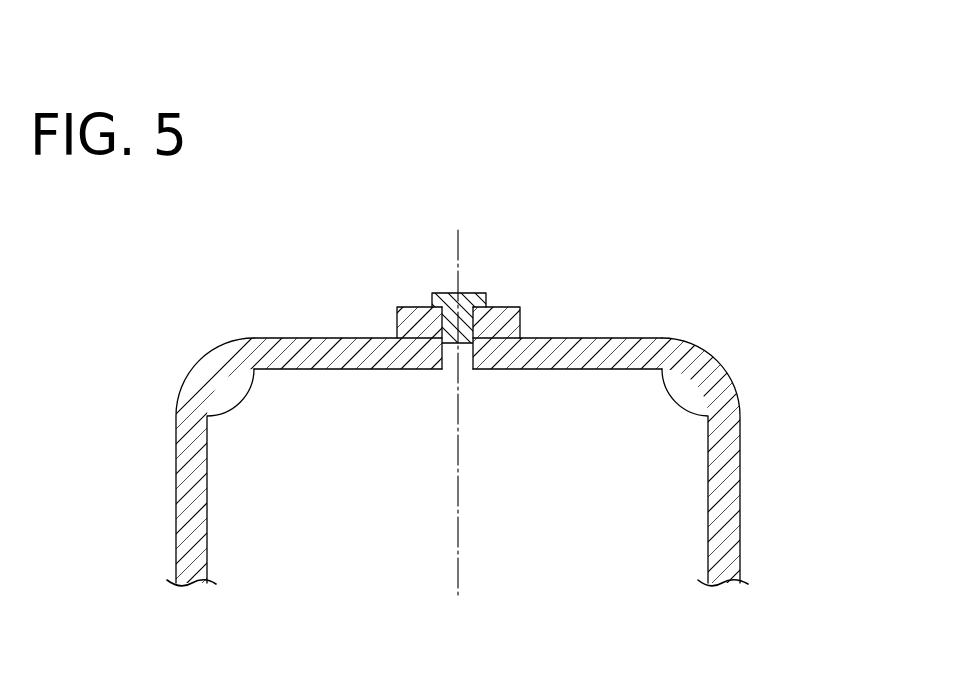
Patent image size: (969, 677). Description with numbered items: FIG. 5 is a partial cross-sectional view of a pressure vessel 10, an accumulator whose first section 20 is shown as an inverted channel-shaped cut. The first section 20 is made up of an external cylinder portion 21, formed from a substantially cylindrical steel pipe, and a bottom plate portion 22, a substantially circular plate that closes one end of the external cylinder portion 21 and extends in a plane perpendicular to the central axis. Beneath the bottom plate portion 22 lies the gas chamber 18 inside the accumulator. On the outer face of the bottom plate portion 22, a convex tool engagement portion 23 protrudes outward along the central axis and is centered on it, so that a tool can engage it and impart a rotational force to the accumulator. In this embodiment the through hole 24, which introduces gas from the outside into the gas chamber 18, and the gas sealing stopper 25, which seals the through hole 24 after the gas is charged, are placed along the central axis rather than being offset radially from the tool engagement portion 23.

The vehicle component assembly 10 is at (753, 262).
The gas chamber 18 is at (257, 501).
The first section 20 is at (838, 367).
The external cylinder portion 21 is at (723, 447).
The bottom plate portion 22 is at (607, 337).
The tool engagement portion 23 is at (507, 307).
The through hole 24 is at (453, 358).
The gas sealing stopper 25 is at (442, 293).